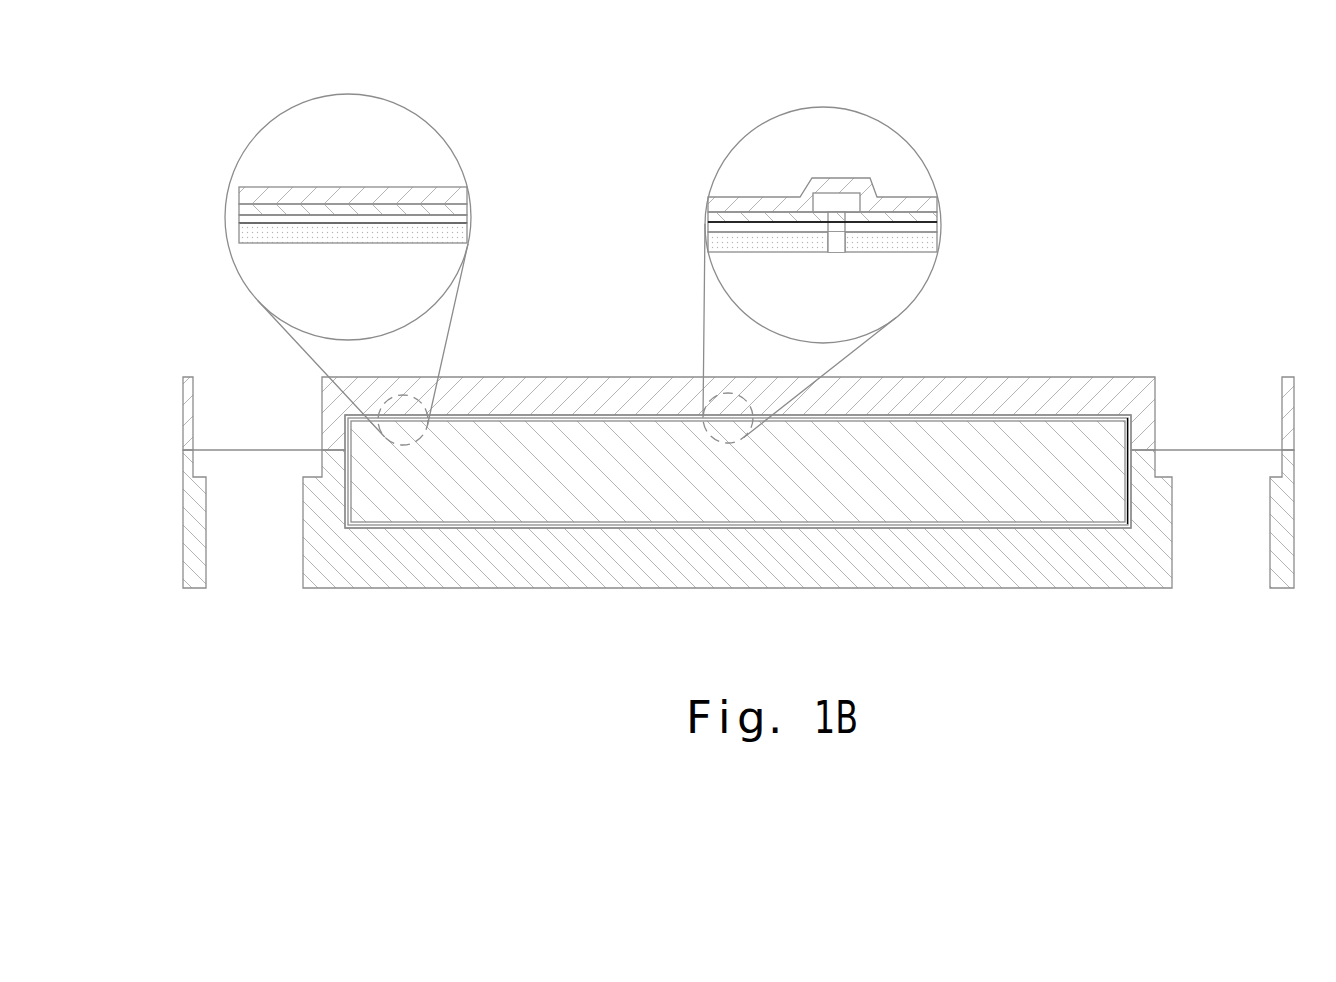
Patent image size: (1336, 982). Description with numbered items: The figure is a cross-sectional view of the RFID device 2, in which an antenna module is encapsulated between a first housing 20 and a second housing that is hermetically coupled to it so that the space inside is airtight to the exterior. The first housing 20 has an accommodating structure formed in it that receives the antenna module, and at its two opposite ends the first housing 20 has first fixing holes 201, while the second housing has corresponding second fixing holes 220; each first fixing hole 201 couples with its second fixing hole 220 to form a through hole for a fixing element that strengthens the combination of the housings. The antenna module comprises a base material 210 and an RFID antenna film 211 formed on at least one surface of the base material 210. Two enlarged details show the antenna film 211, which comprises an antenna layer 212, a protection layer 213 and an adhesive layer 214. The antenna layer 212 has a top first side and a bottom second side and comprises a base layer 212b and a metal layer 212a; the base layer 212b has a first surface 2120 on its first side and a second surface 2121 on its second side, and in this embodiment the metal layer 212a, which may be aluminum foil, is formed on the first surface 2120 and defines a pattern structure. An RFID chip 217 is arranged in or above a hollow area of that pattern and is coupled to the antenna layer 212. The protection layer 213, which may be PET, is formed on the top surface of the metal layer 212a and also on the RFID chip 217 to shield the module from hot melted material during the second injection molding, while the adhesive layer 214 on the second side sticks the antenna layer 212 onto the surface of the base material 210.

The RFID device 2 is at (710, 361).
The first housing 20 is at (723, 473).
The first fixing hole 201 is at (1223, 565).
The second fixing hole 220 is at (1228, 398).
The base material 210 is at (722, 495).
The RFID antenna film 211 is at (589, 200).
The antenna layer 212 is at (589, 216).
The metal layer 212a is at (463, 210).
The base layer 212b is at (463, 220).
The first surface 2120 is at (366, 216).
The second surface 2121 is at (367, 224).
The protection layer 213 is at (239, 197).
The adhesive layer 214 is at (239, 230).
The RFID chip 217 is at (828, 200).